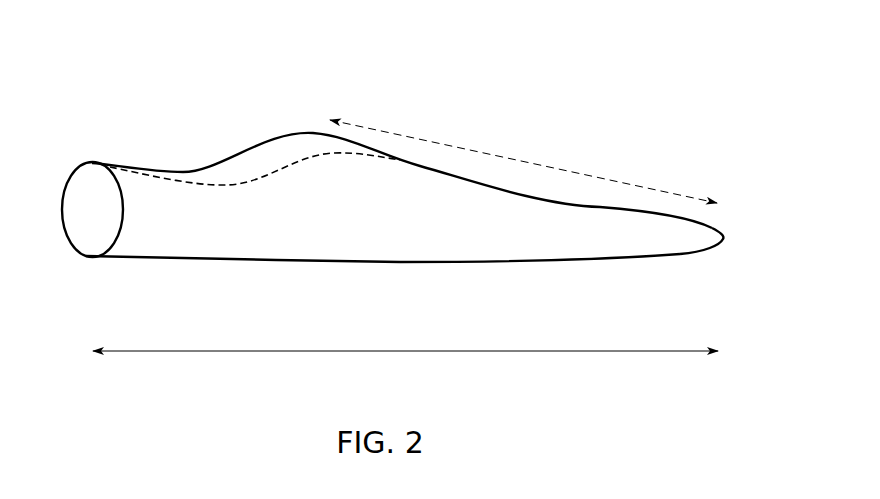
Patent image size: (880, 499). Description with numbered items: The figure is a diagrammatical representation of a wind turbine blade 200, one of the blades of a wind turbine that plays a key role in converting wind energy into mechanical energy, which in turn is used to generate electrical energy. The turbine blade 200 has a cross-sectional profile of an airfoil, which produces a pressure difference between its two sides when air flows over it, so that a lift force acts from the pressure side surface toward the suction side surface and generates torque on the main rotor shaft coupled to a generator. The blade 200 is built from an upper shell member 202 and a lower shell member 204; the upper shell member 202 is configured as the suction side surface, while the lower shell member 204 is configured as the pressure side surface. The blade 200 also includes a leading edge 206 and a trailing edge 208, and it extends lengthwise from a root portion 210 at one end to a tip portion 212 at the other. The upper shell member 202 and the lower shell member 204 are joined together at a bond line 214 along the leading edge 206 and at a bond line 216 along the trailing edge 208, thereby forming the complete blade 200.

The turbine blade 200 is at (113, 60).
The upper shell member 202 is at (293, 185).
The lower shell member 204 is at (245, 253).
The leading edge 206 is at (567, 262).
The trailing edge 208 is at (440, 170).
The root portion 210 is at (157, 190).
The tip portion 212 is at (700, 243).
The bond line 214 is at (345, 350).
The bond line 216 is at (583, 173).